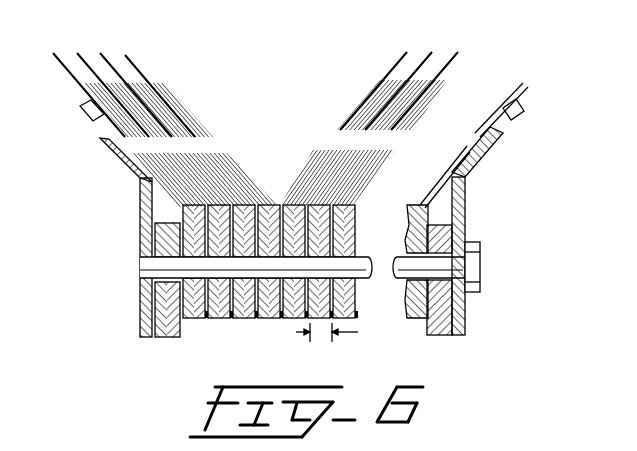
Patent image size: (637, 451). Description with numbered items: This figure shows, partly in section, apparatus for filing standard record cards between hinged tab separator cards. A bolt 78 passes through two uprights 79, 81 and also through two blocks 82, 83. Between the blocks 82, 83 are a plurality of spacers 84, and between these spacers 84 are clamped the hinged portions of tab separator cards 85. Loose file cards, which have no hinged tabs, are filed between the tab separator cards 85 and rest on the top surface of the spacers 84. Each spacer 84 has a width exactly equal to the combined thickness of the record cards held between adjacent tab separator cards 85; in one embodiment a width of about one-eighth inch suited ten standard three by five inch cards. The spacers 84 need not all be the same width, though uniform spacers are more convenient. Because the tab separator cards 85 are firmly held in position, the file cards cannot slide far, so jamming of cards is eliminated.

The bolt 78 is at (142, 294).
The upright 79 is at (140, 186).
The upright 81 is at (466, 183).
The block 82 is at (170, 334).
The block 83 is at (428, 327).
The spacer 84 is at (222, 323).
The tab separator card 85 is at (77, 53).